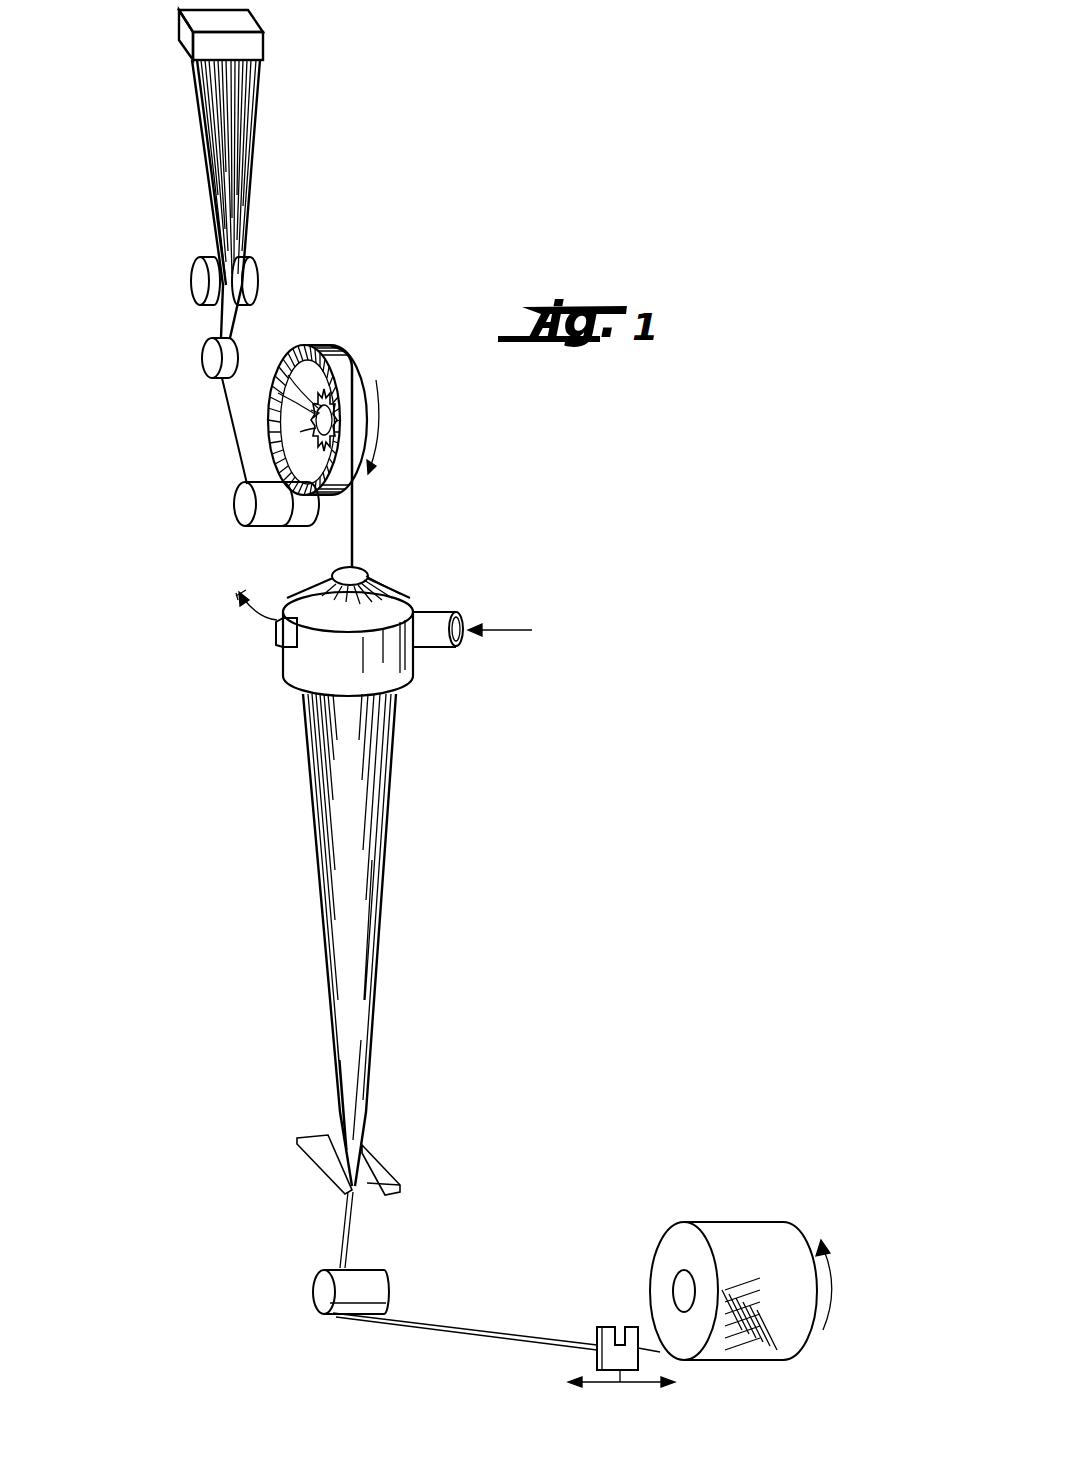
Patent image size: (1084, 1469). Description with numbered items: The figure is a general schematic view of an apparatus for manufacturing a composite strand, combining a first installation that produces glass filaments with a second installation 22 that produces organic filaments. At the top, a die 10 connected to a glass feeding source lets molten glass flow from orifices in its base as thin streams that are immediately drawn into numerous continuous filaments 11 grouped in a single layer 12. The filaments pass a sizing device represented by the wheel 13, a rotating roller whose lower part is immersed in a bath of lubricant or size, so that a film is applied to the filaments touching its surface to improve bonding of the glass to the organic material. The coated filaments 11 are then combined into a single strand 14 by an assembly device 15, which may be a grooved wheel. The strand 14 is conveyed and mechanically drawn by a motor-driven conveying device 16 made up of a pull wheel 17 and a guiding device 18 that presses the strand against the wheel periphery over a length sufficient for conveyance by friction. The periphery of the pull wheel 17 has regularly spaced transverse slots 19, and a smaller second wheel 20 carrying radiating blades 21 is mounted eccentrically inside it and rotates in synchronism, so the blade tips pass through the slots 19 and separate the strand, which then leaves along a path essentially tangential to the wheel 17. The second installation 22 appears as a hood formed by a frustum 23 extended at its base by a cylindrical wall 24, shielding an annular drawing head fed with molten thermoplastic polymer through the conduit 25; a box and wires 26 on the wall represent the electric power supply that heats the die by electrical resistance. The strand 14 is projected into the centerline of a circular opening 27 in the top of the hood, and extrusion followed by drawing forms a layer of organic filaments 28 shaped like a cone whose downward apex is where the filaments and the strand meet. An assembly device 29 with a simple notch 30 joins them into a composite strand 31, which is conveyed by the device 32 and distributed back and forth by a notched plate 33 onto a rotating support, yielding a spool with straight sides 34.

The die 10 is at (255, 49).
The continuous glass filaments 11 is at (244, 98).
The single layer 12 is at (269, 199).
The wheel 13 is at (199, 268).
The strand 14 is at (234, 436).
The assembly device 15 is at (204, 356).
The conveying device 16 is at (340, 397).
The pull wheel 17 is at (363, 388).
The strand guiding device 18 is at (240, 502).
The transverse slots 19 is at (352, 411).
The second wheel 20 is at (298, 362).
The radiating blades 21 is at (282, 400).
The second installation 22 is at (359, 651).
The frustum 23 is at (396, 588).
The cylindrical wall 24 is at (403, 677).
The conduit 25 is at (440, 649).
The box and wires 26 is at (263, 642).
The circular opening 27 is at (362, 574).
The organic filaments 28 is at (330, 798).
The assembly device 29 is at (318, 1138).
The notch 30 is at (370, 1190).
The composite strand 31 is at (342, 1227).
The conveying device 32 is at (320, 1288).
The notched plate 33 is at (615, 1345).
The spool with straight sides 34 is at (745, 1236).